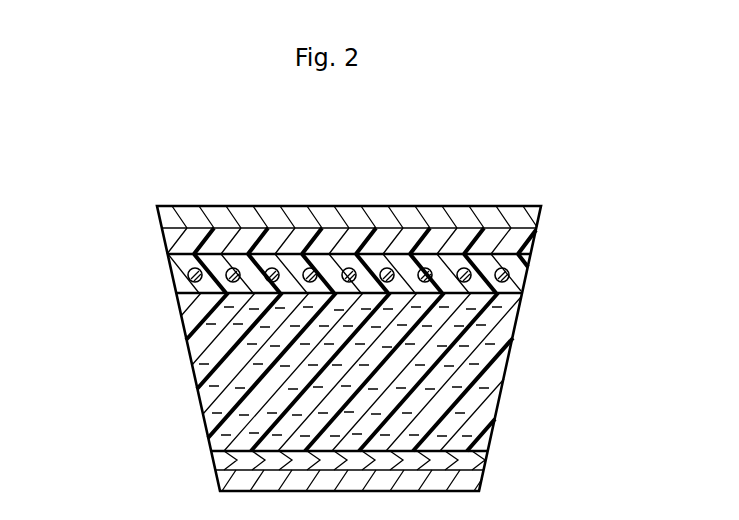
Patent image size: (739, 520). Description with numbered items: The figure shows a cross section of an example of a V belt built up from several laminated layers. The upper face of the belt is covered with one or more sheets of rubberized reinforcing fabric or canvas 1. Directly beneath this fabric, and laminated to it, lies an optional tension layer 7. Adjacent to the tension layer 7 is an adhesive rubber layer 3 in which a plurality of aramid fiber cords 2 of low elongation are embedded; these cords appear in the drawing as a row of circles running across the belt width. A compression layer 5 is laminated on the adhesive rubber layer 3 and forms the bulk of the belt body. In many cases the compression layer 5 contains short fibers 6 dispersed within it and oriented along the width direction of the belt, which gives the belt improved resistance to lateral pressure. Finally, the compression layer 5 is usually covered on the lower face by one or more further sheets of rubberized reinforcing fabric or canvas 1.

The rubberized reinforcing fabric or canvas 1 is at (500, 207).
The aramid fiber cords 2 is at (228, 294).
The adhesive rubber layer 3 is at (518, 278).
The compression layer 5 is at (473, 395).
The short fibers 6 is at (267, 395).
The tension layer 7 is at (530, 240).